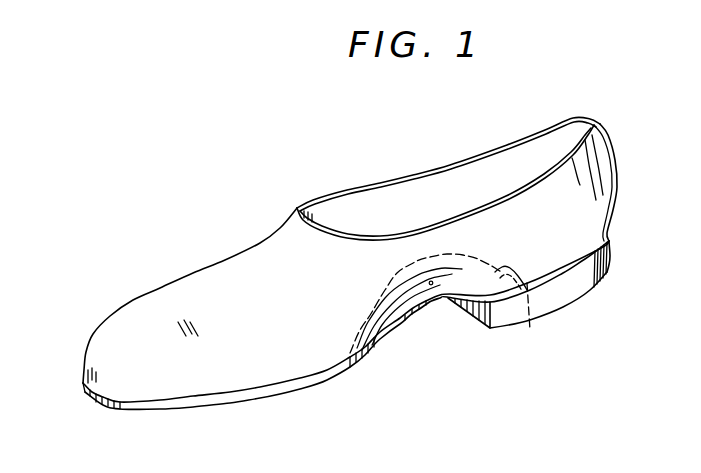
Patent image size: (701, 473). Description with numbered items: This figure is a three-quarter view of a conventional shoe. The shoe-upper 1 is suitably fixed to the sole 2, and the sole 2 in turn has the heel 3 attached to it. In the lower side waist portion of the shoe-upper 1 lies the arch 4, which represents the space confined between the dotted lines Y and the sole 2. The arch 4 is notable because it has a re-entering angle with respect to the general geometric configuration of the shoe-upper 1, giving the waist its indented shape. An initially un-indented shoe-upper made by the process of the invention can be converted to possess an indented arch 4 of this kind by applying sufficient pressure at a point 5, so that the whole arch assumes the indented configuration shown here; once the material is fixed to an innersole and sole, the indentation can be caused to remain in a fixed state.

The shoe-upper 1 is at (605, 205).
The sole 2 is at (261, 400).
The heel 3 is at (563, 297).
The arch 4 is at (388, 312).
The point 5 is at (432, 283).
The dotted lines Y is at (530, 323).